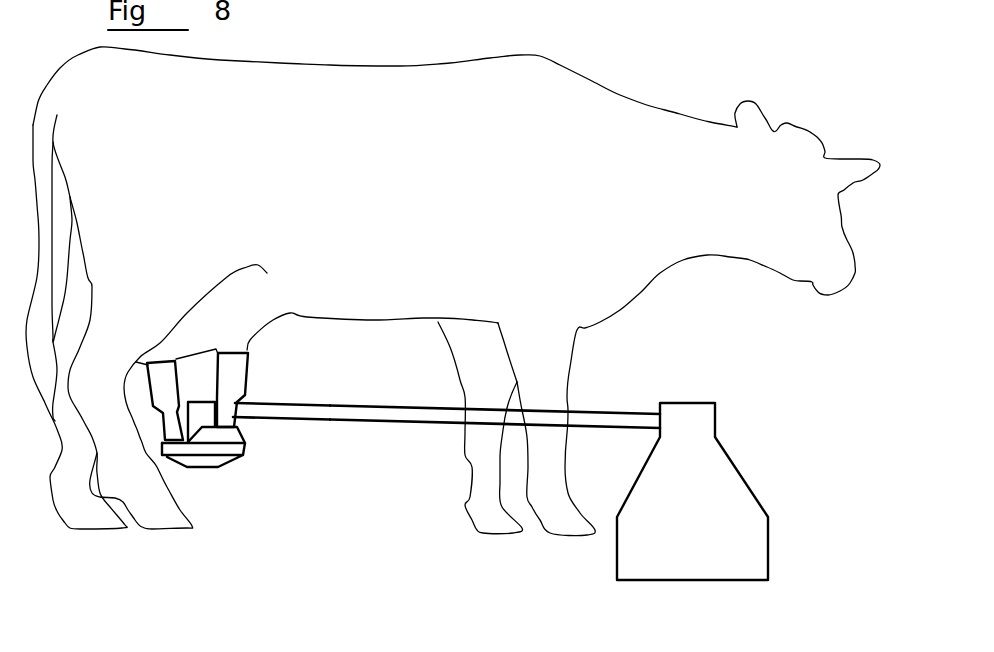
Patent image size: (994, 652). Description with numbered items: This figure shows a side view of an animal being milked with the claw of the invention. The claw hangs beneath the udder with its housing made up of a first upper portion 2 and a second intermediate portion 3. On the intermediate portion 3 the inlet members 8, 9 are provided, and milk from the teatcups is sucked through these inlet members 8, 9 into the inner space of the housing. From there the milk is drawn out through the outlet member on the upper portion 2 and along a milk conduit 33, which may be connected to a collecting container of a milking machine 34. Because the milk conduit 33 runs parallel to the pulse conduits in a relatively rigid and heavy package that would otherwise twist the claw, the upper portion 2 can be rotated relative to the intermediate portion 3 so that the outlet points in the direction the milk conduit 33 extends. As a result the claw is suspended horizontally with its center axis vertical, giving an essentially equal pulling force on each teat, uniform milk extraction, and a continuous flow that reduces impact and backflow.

The first upper portion 2 is at (200, 400).
The second intermediate portion 3 is at (225, 443).
The inlet member 8 is at (240, 412).
The inlet member 9 is at (165, 442).
The milk conduit 33 is at (495, 433).
The milking machine 34 is at (707, 472).